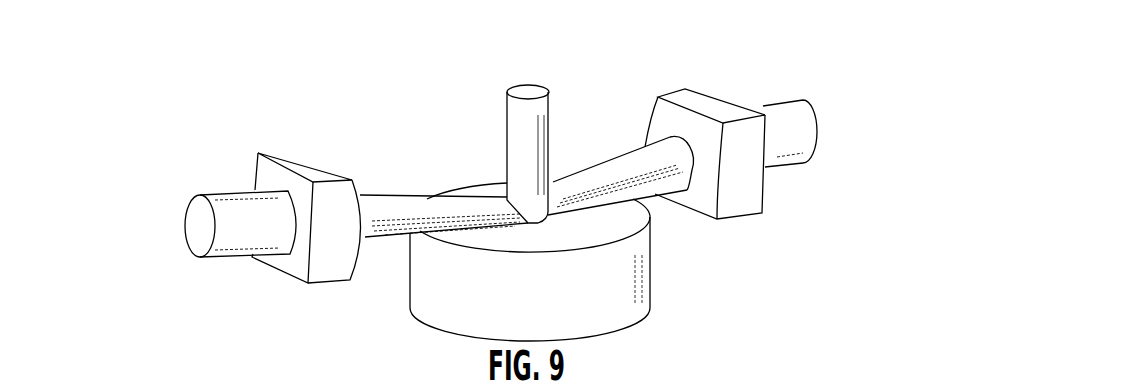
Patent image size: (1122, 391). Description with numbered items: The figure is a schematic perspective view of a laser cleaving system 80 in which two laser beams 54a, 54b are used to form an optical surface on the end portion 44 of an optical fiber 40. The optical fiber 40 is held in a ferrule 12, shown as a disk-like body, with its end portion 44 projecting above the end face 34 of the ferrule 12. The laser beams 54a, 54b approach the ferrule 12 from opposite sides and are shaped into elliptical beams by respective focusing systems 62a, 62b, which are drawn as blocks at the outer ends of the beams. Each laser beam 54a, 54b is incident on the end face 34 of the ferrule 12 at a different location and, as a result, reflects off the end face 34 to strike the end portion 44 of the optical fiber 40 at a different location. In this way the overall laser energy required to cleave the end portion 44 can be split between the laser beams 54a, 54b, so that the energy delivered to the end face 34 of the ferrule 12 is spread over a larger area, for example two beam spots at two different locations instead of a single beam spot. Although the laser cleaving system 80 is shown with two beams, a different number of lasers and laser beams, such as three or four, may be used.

The ferrule 12 is at (660, 293).
The end face 34 is at (606, 218).
The optical fiber 40 is at (525, 80).
The end portion 44 is at (516, 125).
The laser beam 54a is at (392, 197).
The laser beam 54b is at (609, 162).
The focusing system 62a is at (280, 153).
The focusing system 62b is at (683, 90).
The laser cleaving system 80 is at (396, 100).